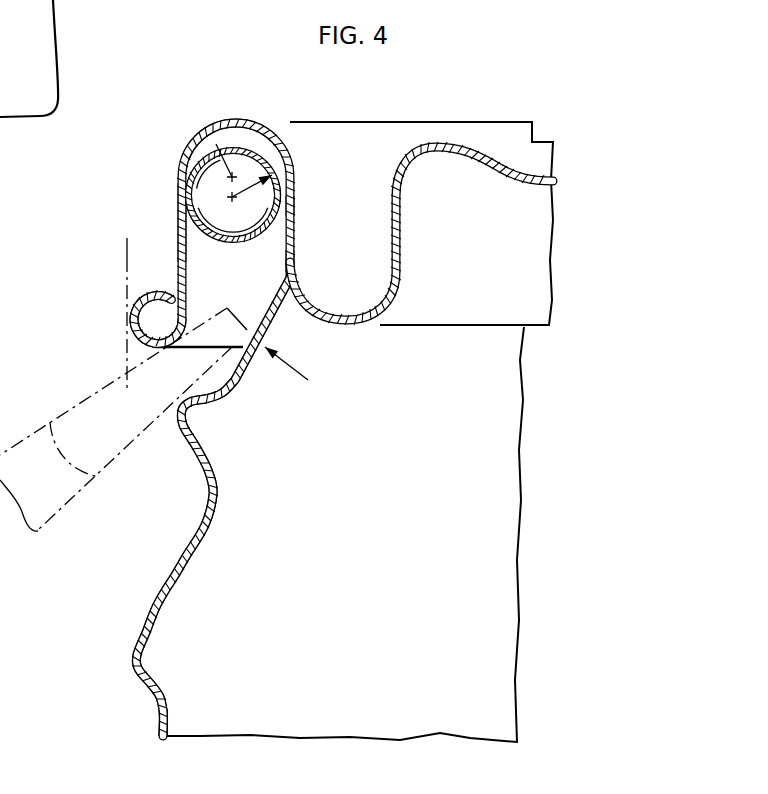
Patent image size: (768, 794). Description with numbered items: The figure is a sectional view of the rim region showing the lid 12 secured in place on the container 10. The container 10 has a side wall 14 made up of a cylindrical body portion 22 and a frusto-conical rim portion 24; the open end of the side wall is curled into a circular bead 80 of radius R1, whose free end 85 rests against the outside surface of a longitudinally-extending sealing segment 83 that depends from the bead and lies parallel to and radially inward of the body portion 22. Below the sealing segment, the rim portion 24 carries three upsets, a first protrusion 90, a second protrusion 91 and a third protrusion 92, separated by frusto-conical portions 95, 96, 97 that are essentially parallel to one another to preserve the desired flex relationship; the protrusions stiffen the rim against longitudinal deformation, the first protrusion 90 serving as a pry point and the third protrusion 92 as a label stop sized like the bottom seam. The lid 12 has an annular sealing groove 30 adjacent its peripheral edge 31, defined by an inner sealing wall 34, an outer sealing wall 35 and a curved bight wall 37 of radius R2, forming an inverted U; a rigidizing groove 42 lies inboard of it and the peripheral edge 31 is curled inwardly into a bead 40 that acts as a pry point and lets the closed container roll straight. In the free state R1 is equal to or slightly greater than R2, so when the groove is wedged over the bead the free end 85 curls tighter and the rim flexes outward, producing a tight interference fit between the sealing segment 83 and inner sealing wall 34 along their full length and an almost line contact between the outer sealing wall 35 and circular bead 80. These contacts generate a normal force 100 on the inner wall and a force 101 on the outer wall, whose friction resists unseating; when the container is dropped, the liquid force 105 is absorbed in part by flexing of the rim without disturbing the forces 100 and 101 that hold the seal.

The container 10 is at (137, 682).
The lid 12 is at (223, 117).
The side wall 14 is at (155, 713).
The cylindrical body portion 22 is at (153, 730).
The frusto-conical rim portion 24 is at (158, 528).
The annular sealing groove 30 is at (182, 145).
The peripheral edge 31 is at (127, 248).
The inner sealing wall 34 is at (293, 233).
The outer sealing wall 35 is at (177, 222).
The bight wall 37 is at (212, 135).
The bead 40 is at (128, 308).
The rigidizing groove 42 is at (343, 312).
The circular bead 80 is at (208, 242).
The sealing segment 83 is at (280, 267).
The free end 85 is at (275, 223).
The first protrusion 90 is at (167, 413).
The second protrusion 91 is at (157, 598).
The third protrusion 92 is at (133, 657).
The frusto-conical portion 95 is at (245, 362).
The frusto-conical portion 96 is at (192, 550).
The frusto-conical portion 97 is at (157, 635).
The force 100 is at (297, 206).
The force 101 is at (175, 192).
The liquid force vector 105 is at (292, 365).
The radius of circular bead R1 is at (280, 175).
The radius of bight wall R2 is at (216, 144).